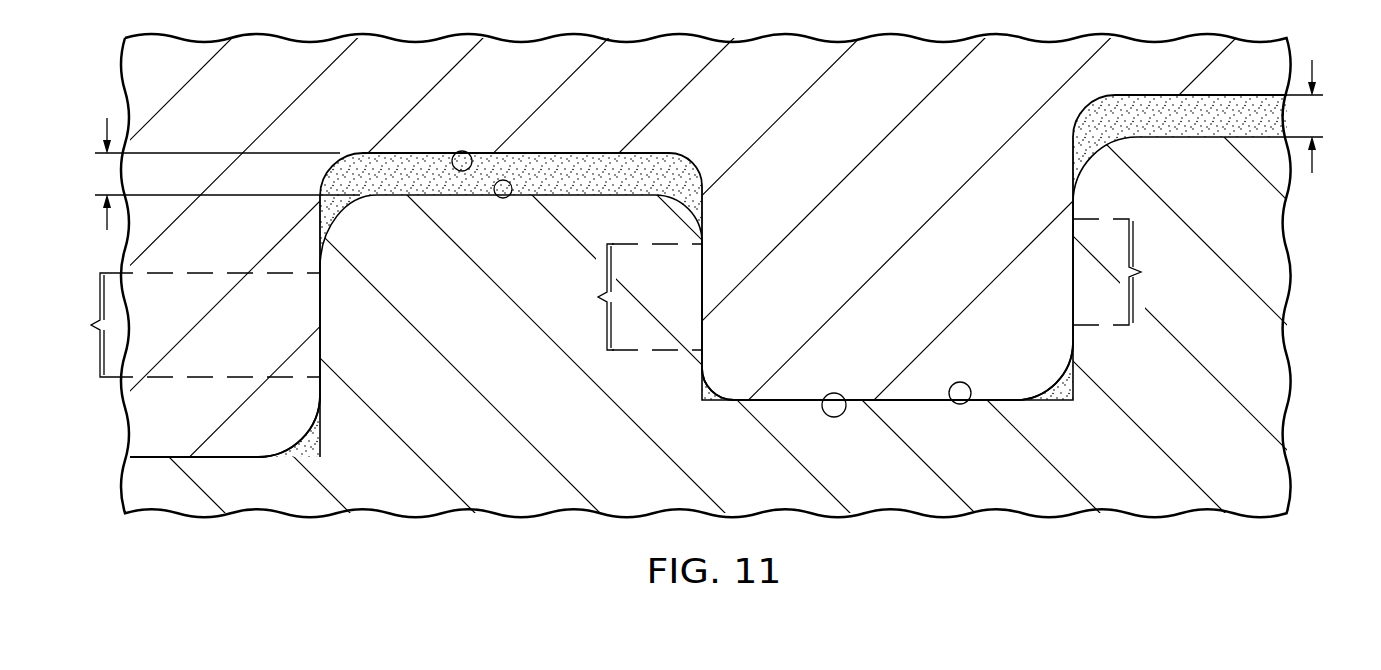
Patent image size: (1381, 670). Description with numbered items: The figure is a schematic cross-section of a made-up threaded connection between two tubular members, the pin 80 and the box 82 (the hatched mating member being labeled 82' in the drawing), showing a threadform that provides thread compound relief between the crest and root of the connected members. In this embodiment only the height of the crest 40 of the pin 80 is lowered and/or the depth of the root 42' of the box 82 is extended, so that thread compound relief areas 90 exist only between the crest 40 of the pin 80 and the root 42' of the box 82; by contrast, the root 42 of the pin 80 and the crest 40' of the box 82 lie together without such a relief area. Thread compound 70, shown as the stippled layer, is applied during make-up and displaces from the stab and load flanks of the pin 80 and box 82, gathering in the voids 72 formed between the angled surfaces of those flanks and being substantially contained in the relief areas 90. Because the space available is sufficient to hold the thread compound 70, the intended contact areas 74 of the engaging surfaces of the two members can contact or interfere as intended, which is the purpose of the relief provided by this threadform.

The crest of the pin 40 is at (505, 216).
The crest of the box 40' is at (958, 419).
The root of the pin 42 is at (835, 379).
The root of the box 42' is at (465, 132).
The thread compound 70 is at (585, 162).
The voids 72 is at (313, 438).
The intended contact areas 74 is at (614, 295).
The pin 80 is at (1278, 360).
The box 82 is at (690, 300).
The second body 82' is at (637, 300).
The thread compound relief areas 90 is at (107, 120).